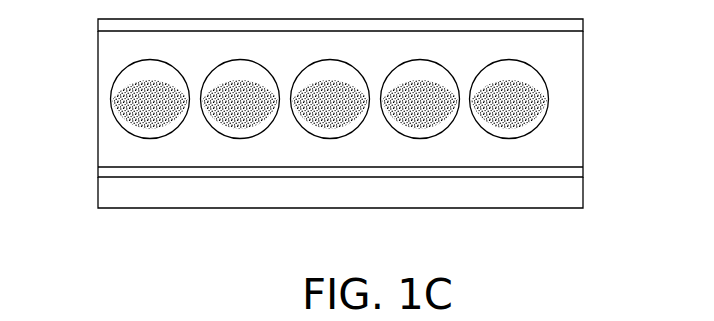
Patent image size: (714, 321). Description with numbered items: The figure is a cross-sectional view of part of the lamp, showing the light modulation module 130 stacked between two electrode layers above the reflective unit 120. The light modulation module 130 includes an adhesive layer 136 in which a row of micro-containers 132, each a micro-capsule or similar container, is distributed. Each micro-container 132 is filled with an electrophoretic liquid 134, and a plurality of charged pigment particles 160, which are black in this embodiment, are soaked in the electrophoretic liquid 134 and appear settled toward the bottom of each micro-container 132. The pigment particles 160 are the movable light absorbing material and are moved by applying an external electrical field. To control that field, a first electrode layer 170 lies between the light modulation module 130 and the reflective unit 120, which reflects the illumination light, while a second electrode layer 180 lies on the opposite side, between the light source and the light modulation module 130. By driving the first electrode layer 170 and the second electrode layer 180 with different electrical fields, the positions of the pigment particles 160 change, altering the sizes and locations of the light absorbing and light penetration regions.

The reflective unit 120 is at (572, 200).
The light modulation module 130 is at (105, 69).
The micro-container 132 is at (531, 66).
The electrophoretic liquid 134 is at (524, 94).
The adhesive layer 136 is at (568, 142).
The pigment particles 160 is at (542, 122).
The first electrode layer 170 is at (579, 172).
The second electrode layer 180 is at (576, 26).